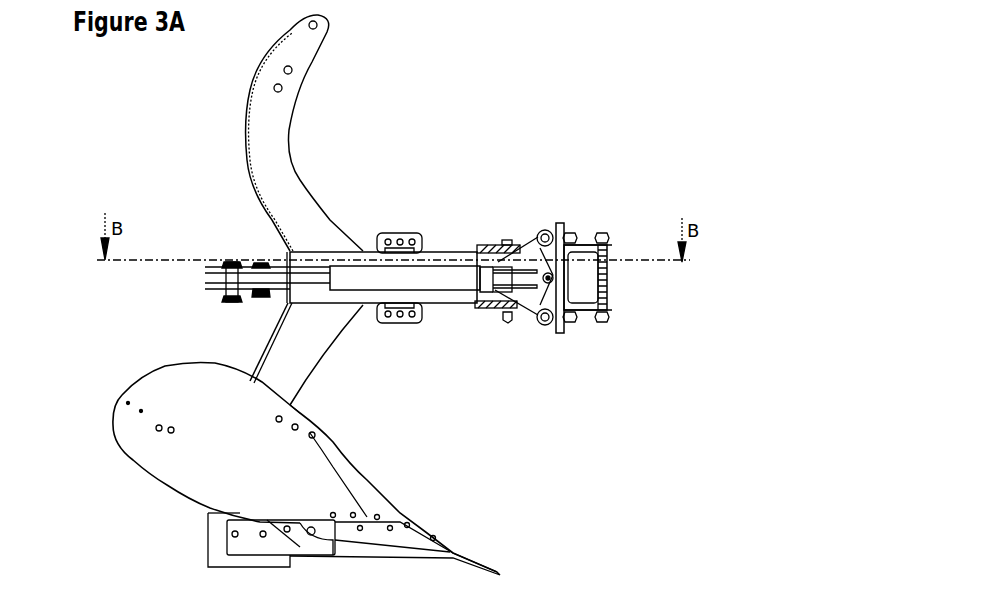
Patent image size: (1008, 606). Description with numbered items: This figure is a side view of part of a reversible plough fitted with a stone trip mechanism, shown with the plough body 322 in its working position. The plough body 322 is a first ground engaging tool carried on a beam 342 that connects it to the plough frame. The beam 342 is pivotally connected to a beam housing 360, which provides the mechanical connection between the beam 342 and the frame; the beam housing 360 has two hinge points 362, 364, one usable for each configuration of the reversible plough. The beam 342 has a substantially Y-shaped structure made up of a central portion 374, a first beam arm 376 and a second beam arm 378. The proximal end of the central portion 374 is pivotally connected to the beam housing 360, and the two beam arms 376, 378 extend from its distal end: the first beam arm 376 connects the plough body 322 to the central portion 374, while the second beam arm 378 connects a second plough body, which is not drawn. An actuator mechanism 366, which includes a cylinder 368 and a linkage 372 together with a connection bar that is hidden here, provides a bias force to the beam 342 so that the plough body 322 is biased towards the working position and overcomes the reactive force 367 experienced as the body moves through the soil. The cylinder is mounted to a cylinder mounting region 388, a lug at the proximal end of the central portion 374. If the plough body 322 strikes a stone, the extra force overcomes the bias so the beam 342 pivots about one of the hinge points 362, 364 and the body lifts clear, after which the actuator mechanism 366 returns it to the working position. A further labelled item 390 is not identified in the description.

The plough body 322 is at (155, 499).
The beam 342 is at (447, 238).
The beam housing 360 is at (590, 244).
The hinge point 362 is at (546, 232).
The hinge point 364 is at (545, 323).
The actuator mechanism 366 is at (185, 294).
The reactive force 367 is at (478, 497).
The cylinder 368 is at (453, 270).
The linkage 372 is at (217, 265).
The central portion 374 is at (432, 304).
The first beam arm 376 is at (306, 358).
The second beam arm 378 is at (262, 138).
The cylinder mounting region 388 is at (523, 287).
The pivot bolt 390 is at (553, 277).